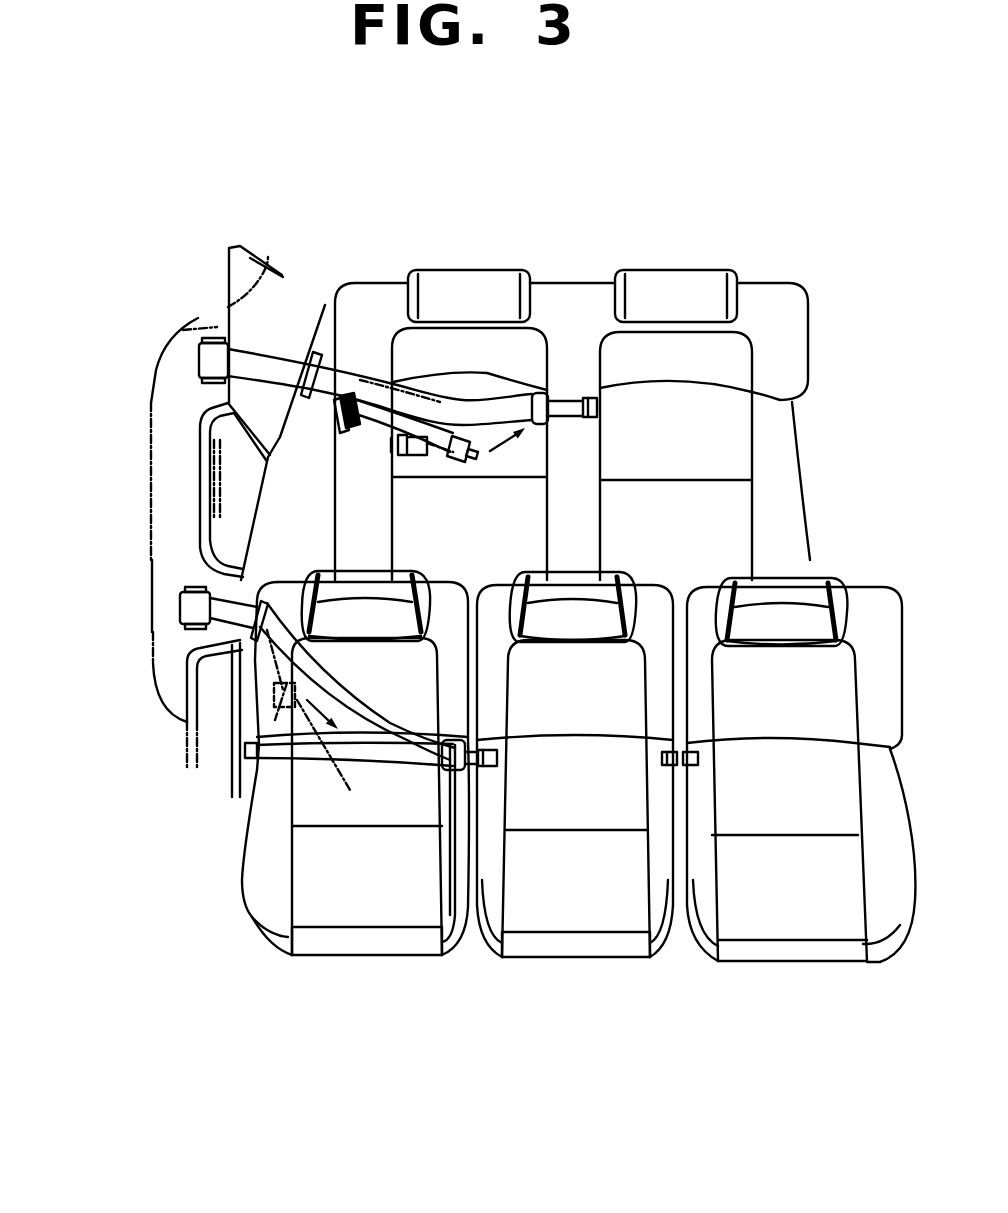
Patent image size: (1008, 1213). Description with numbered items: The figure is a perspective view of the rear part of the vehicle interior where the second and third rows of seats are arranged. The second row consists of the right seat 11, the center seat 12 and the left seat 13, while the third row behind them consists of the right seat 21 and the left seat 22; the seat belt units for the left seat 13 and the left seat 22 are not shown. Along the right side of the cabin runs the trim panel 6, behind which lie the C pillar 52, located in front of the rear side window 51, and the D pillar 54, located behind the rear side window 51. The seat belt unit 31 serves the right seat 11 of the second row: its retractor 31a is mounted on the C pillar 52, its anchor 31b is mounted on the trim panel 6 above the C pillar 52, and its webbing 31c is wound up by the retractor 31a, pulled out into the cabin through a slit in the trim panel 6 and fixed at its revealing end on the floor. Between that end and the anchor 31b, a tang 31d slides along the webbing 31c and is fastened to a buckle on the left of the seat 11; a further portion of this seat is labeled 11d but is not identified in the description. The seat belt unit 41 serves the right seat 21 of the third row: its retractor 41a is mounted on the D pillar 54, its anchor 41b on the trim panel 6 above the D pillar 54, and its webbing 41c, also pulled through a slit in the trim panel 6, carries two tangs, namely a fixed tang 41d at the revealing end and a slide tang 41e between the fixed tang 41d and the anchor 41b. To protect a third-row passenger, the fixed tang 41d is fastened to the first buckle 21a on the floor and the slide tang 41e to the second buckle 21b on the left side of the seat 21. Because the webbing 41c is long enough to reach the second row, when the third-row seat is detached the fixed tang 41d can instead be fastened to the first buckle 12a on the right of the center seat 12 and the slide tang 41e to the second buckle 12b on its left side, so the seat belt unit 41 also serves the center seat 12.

The trim panel 6 is at (268, 278).
The right seat 11 is at (368, 972).
The side portion of front seat 11d is at (463, 773).
The center seat 12 is at (595, 972).
The first buckle 12a is at (490, 760).
The second buckle 12b is at (668, 766).
The left seat 13 is at (805, 974).
The right seat 21 is at (388, 296).
The first buckle 21a is at (350, 424).
The second buckle 21b is at (590, 420).
The left seat 22 is at (763, 316).
The seat belt unit 31 is at (284, 612).
The retractor 31a is at (180, 590).
The anchor 31b is at (265, 598).
The webbing 31c is at (300, 680).
The tang 31d is at (457, 762).
The seat belt unit 41 is at (266, 348).
The retractor 41a is at (203, 338).
The anchor 41b is at (306, 404).
The webbing 41c is at (370, 388).
The fixed tang 41d is at (362, 442).
The slide tang 41e is at (478, 462).
The rear side window 51 is at (190, 487).
The C pillar 52 is at (178, 655).
The D pillar 54 is at (195, 399).